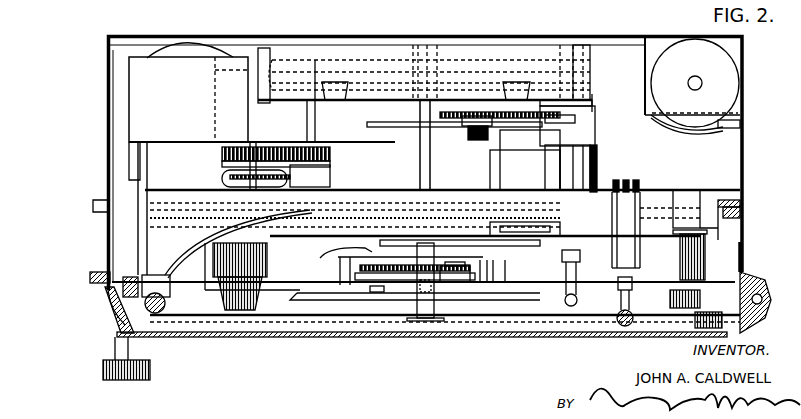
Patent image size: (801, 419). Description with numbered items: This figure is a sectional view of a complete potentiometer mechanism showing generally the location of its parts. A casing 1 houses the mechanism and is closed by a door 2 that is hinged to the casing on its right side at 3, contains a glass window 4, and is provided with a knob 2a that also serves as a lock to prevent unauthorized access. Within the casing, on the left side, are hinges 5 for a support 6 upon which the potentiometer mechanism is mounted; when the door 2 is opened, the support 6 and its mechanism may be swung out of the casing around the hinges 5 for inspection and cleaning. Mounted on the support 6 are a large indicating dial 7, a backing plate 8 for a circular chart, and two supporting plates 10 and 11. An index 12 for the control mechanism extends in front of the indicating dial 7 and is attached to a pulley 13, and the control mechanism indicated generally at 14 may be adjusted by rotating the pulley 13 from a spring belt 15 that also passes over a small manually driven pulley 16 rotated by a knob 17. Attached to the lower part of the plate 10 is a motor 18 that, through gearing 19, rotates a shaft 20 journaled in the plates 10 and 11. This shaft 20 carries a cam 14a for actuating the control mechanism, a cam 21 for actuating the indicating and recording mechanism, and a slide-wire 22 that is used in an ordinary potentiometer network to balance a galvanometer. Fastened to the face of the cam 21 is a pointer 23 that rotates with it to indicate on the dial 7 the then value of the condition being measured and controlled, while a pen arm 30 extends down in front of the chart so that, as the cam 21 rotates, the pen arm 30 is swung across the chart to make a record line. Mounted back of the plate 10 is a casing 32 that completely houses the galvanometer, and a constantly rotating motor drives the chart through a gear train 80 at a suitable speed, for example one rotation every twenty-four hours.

The casing 1 is at (107, 70).
The door 2 is at (110, 312).
The knob 2a is at (146, 380).
The hinge 3 is at (770, 300).
The glass window 4 is at (458, 338).
The hinges 5 is at (148, 308).
The support 6 is at (155, 248).
The indicating dial 7 is at (332, 318).
The backing plate 8 is at (377, 292).
The supporting plate 10 is at (688, 208).
The supporting plate 11 is at (594, 105).
The index 12 is at (208, 298).
The pulley 13 is at (530, 240).
The control mechanism 14 is at (270, 136).
The cam 14a is at (448, 190).
The spring belt 15 is at (604, 240).
The small manually driven pulley 16 is at (676, 236).
The knob 17 is at (668, 299).
The motor 18 is at (598, 165).
The gearing 19 is at (478, 140).
The shaft 20 is at (424, 146).
The cam 21 is at (325, 257).
The slide-wire 22 is at (466, 83).
The pointer 23 is at (418, 322).
The pen arm 30 is at (338, 300).
The casing 32 is at (157, 62).
The gear train 80 is at (458, 273).